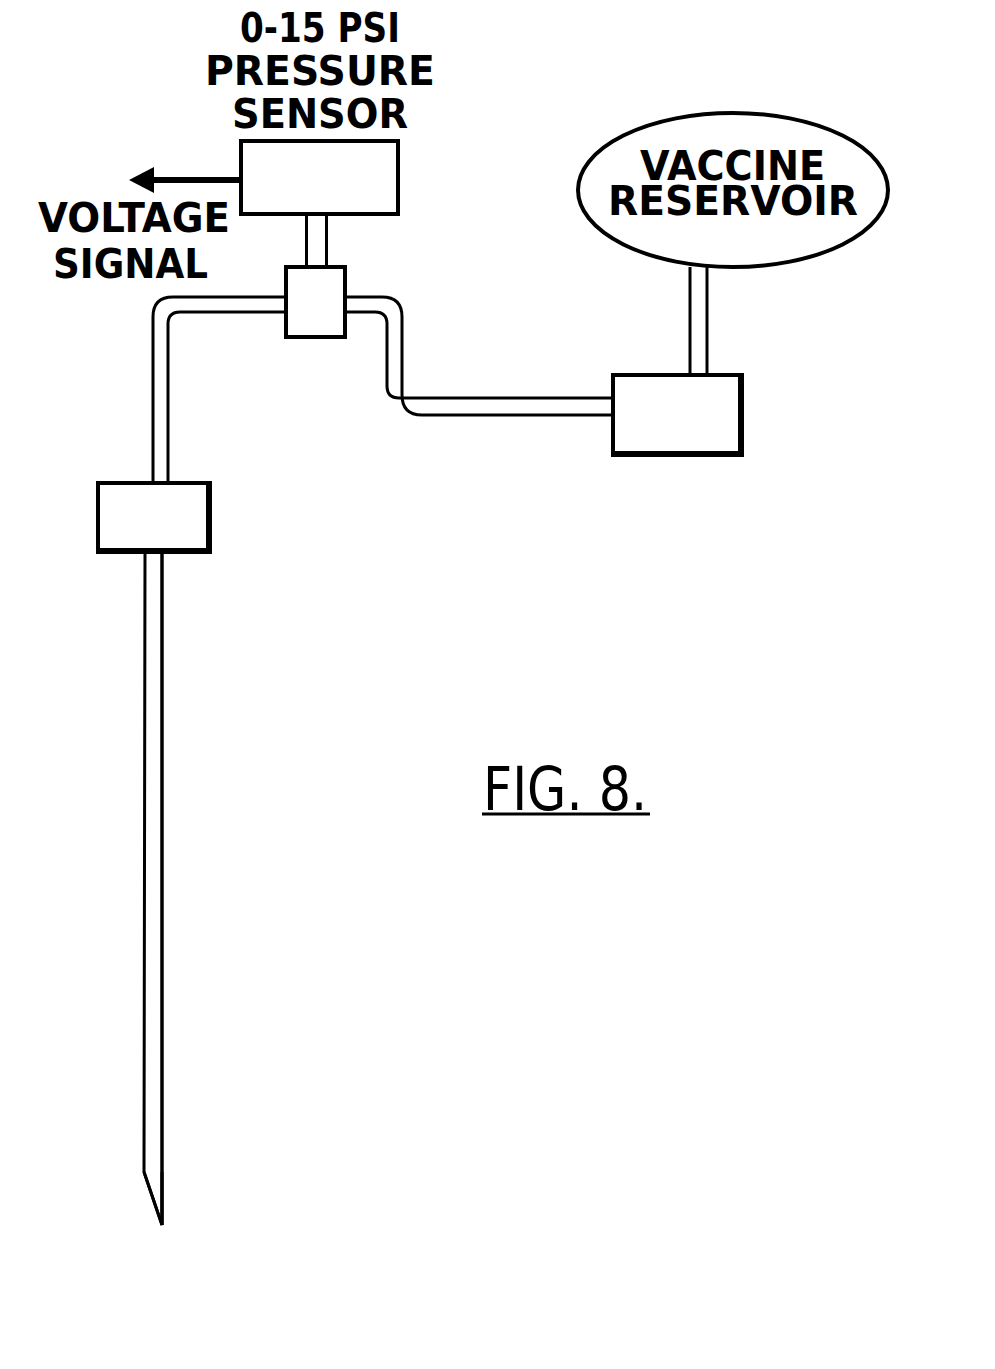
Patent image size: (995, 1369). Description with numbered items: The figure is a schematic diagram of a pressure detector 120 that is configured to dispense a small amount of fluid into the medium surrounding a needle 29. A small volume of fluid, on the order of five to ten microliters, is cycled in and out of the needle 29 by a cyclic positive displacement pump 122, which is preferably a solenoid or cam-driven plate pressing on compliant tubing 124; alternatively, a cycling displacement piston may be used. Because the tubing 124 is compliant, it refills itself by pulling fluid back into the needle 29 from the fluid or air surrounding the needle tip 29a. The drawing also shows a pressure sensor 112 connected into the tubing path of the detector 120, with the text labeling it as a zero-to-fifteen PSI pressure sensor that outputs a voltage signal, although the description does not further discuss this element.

The pressure detector 120 is at (539, 108).
The 0-15 PSI pressure sensor 112 is at (398, 191).
The cyclic positive displacement pump 122 is at (742, 423).
The compliant tubing 124 is at (477, 416).
The needle 29 is at (162, 797).
The needle tip 29a is at (162, 1178).